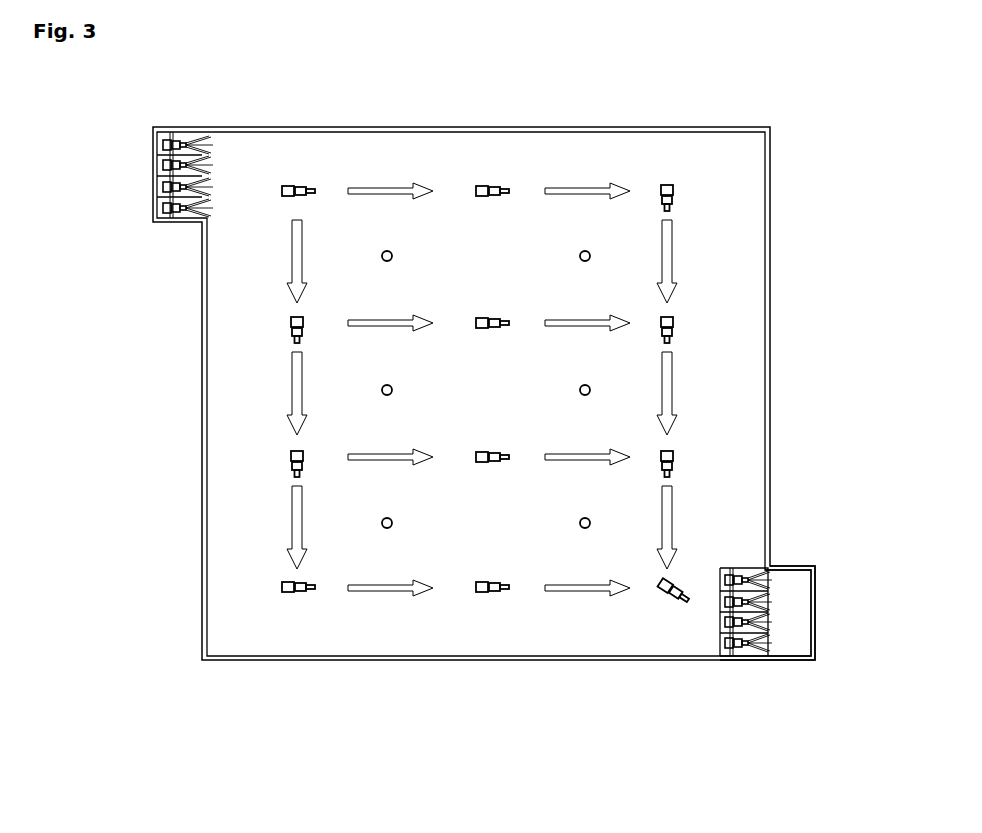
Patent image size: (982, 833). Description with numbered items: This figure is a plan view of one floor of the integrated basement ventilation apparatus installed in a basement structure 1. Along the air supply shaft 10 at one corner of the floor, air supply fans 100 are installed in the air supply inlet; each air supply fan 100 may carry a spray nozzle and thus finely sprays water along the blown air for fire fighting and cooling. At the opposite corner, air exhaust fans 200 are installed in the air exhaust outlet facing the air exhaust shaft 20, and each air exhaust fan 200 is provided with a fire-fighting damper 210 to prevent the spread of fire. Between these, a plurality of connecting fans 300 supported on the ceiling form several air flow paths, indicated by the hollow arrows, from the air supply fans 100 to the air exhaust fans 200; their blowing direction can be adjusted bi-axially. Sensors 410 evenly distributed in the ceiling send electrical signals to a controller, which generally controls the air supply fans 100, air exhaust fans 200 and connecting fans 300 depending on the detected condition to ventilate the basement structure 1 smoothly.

The basement structure 1 is at (503, 684).
The air supply shaft 10 is at (152, 152).
The air supply fan 100 is at (152, 205).
The air exhaust shaft 20 is at (803, 627).
The air exhaust fan 200 is at (729, 659).
The fire-fighting damper 210 is at (772, 582).
The connecting fan 300 is at (485, 184).
The sensor 410 is at (590, 254).